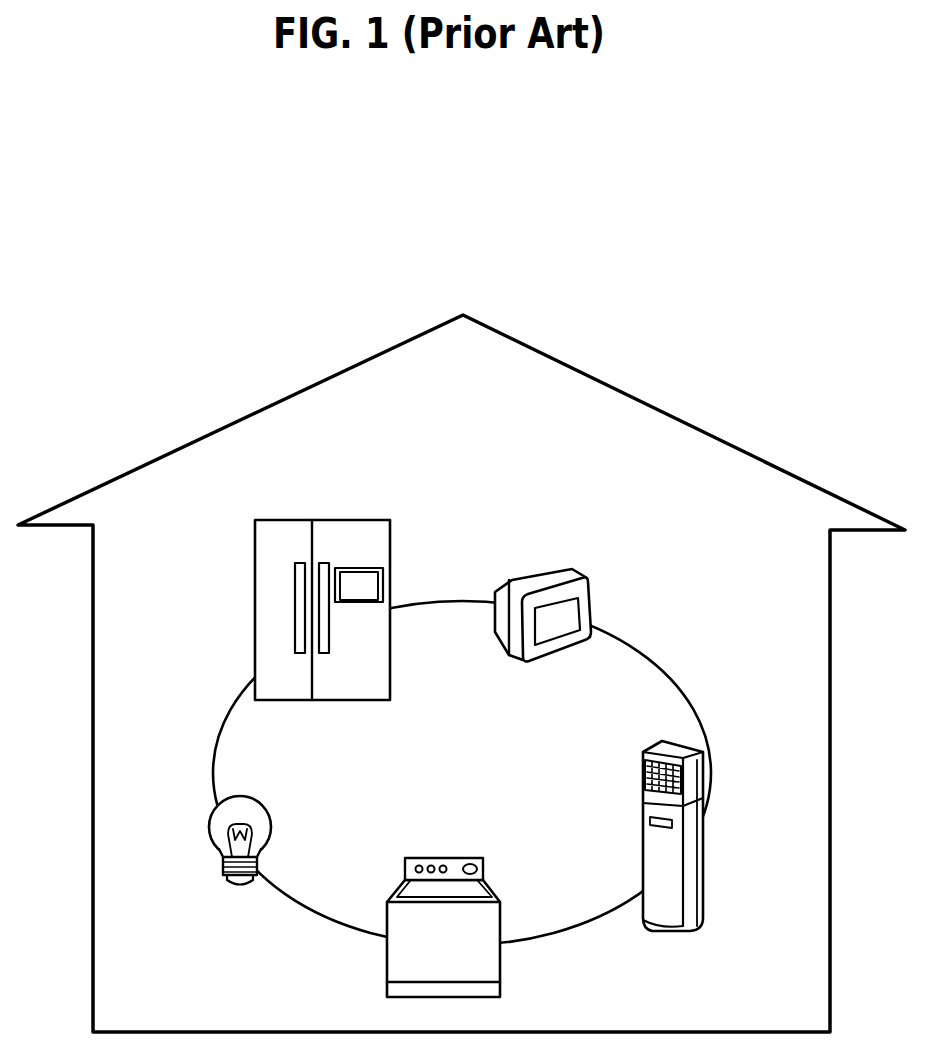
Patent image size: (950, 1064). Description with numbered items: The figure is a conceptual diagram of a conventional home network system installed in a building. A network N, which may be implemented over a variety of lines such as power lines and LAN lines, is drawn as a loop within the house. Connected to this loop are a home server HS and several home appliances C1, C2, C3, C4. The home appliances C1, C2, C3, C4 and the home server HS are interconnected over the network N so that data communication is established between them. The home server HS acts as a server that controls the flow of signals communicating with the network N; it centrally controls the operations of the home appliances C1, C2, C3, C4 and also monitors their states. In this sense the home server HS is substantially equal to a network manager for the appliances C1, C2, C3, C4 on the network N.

The home server HS is at (342, 520).
The home appliance C1 is at (578, 576).
The home appliance C2 is at (704, 850).
The home appliance C3 is at (500, 964).
The home appliance C4 is at (214, 843).
The network N is at (678, 670).